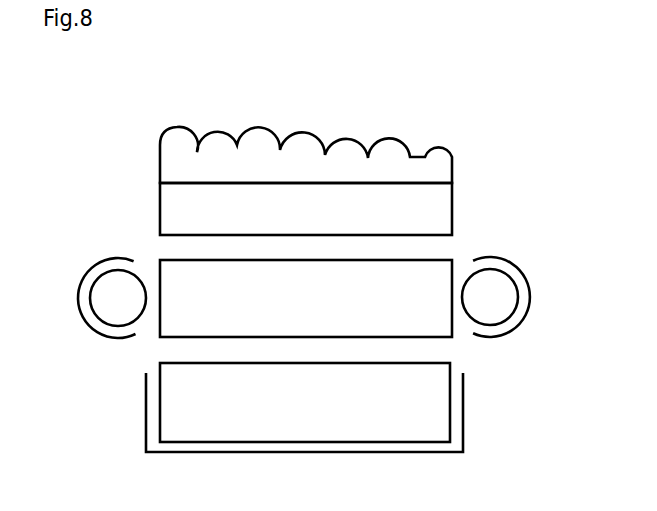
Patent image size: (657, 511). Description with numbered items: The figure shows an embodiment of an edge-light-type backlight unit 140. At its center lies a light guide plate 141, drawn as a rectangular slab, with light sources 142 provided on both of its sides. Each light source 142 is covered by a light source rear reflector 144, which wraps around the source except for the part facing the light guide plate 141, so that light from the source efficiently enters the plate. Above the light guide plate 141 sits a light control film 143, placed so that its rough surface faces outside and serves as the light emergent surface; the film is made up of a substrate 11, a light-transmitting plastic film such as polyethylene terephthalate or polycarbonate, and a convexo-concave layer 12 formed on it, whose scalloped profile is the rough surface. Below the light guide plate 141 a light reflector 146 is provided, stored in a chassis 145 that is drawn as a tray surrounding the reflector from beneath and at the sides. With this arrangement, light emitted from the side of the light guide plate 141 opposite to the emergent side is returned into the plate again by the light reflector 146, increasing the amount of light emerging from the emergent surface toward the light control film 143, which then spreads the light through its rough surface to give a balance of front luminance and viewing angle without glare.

The backlight unit 140 is at (513, 133).
The light control film 143 is at (547, 165).
The convexo-concave layer 12 is at (450, 168).
The substrate 11 is at (450, 220).
The light guide plate 141 is at (452, 337).
The light source 142 is at (146, 323).
The light source rear reflector 144 is at (120, 255).
The chassis 145 is at (465, 440).
The light reflector 146 is at (450, 413).